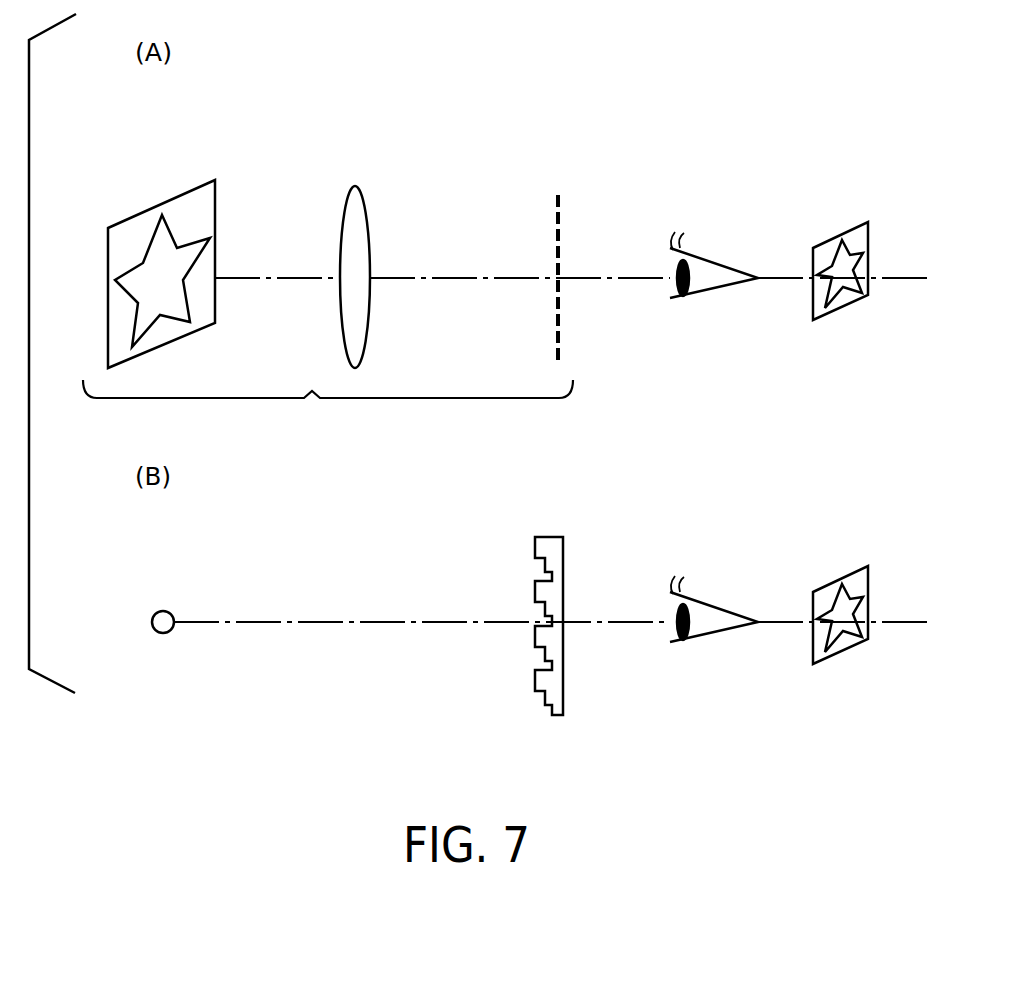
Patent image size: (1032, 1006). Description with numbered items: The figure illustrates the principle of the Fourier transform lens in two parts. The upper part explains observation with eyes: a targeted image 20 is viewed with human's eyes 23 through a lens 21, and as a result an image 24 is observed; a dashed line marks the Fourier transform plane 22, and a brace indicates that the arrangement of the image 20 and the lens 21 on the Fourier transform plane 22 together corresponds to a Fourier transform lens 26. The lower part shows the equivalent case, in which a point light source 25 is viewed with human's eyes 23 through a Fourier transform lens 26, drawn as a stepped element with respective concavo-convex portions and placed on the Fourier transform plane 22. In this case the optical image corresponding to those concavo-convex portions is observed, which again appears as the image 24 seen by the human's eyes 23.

The object (display image) 20 is at (122, 221).
The lens 21 is at (355, 187).
The image plane 22 is at (559, 212).
The eye of observer 23 is at (705, 258).
The virtual image 24 is at (840, 242).
The point light source 25 is at (163, 611).
The optical system (phase-modulating element) 26 is at (550, 537).